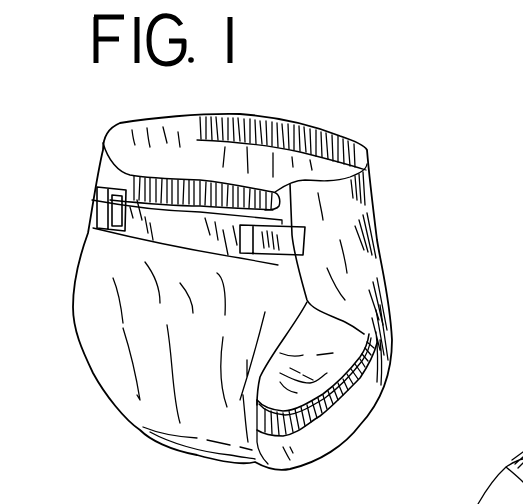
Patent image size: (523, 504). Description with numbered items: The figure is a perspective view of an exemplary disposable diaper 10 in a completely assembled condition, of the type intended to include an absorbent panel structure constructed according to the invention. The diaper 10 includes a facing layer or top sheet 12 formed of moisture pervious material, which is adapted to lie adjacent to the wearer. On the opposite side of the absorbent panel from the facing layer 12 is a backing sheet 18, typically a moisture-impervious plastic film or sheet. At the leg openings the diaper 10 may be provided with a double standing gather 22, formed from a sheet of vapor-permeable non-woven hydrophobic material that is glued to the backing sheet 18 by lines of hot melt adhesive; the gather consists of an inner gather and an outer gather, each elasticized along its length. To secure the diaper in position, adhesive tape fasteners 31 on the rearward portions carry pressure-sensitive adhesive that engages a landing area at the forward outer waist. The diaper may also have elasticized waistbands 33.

The disposable diaper 10 is at (380, 247).
The facing layer or top sheet 12 is at (330, 341).
The backing sheet 18 is at (363, 301).
The double standing gather 22 is at (328, 392).
The adhesive tape fasteners 31 is at (97, 203).
The elasticized waistbands 33 is at (302, 140).